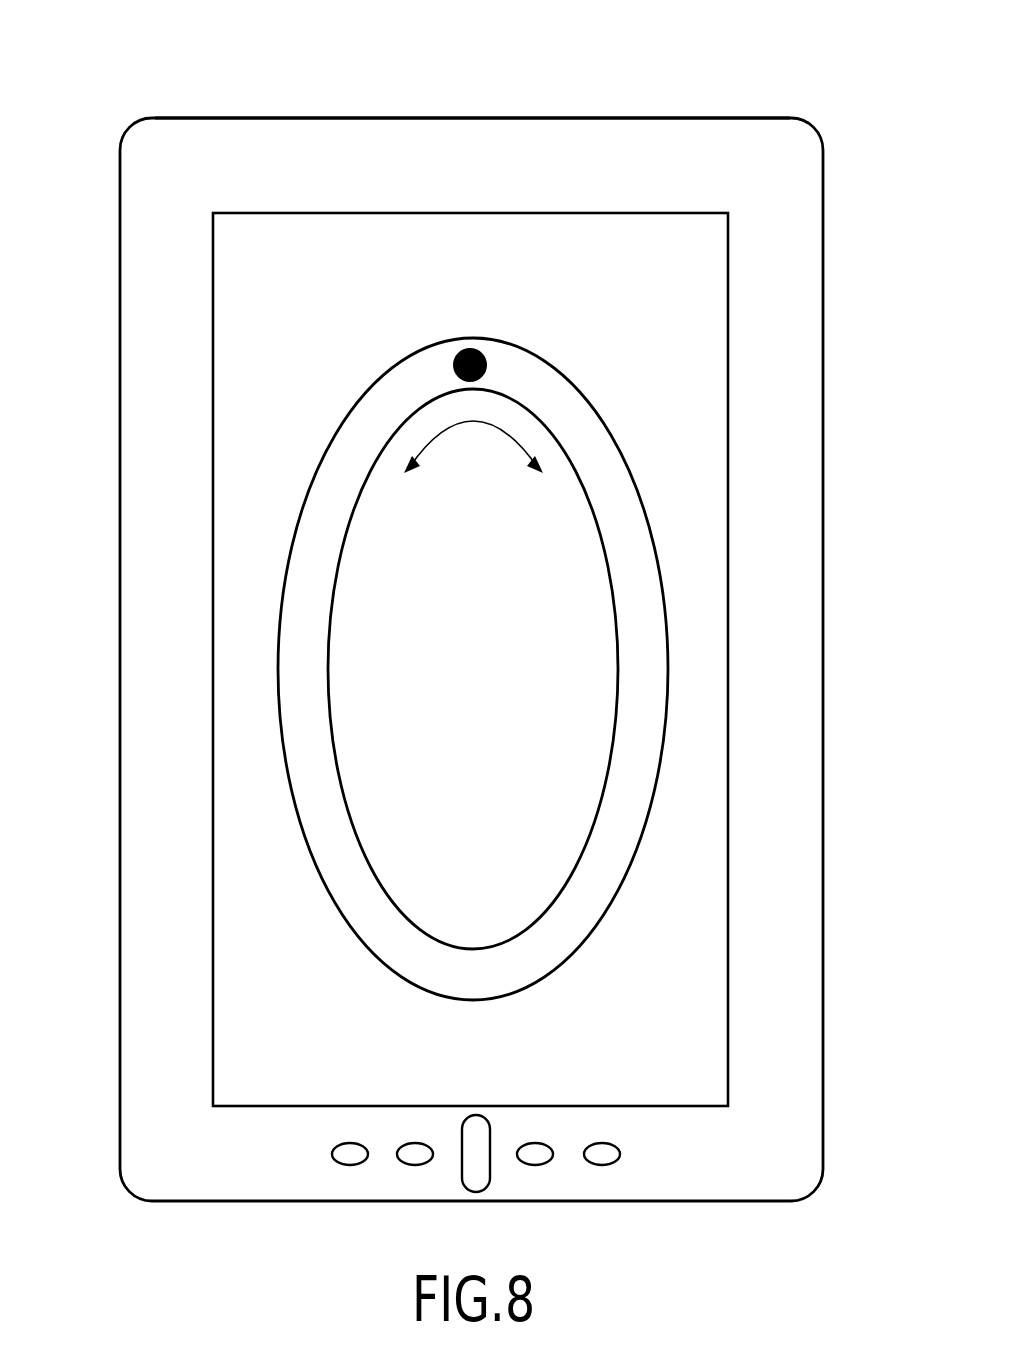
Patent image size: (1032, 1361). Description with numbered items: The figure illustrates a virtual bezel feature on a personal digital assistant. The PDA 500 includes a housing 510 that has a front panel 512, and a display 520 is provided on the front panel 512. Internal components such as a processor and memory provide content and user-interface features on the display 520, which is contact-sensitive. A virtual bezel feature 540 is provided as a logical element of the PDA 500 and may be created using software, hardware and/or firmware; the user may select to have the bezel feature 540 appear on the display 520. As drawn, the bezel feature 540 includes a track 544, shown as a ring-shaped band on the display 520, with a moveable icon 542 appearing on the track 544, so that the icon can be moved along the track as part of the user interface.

The PDA 500 is at (473, 600).
The housing 510 is at (119, 505).
The front panel 512 is at (262, 129).
The display 520 is at (494, 1073).
The virtual bezel feature 540 is at (493, 816).
The moveable icon 542 is at (477, 348).
The track 544 is at (580, 404).